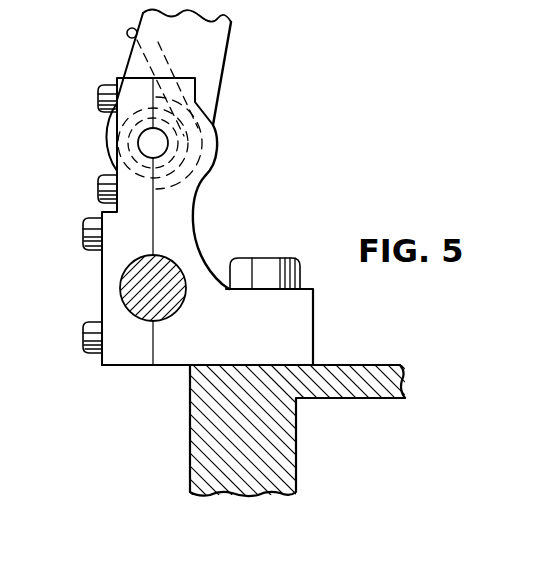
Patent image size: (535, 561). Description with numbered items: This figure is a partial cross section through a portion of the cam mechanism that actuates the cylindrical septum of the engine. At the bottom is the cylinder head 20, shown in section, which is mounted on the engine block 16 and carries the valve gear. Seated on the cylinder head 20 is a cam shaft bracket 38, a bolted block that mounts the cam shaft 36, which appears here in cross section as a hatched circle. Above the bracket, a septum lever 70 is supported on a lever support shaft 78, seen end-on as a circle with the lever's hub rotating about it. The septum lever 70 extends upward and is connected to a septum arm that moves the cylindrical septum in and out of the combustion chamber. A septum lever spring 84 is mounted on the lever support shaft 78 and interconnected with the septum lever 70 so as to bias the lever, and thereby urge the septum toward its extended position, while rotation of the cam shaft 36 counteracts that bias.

The engine block 16 is at (438, 7).
The cylinder head 20 is at (203, 430).
The cam shaft 36 is at (133, 279).
The cam shaft bracket 38 is at (297, 317).
The septum lever 70 is at (211, 64).
The lever support shaft 78 is at (150, 144).
The septum lever spring 84 is at (127, 33).